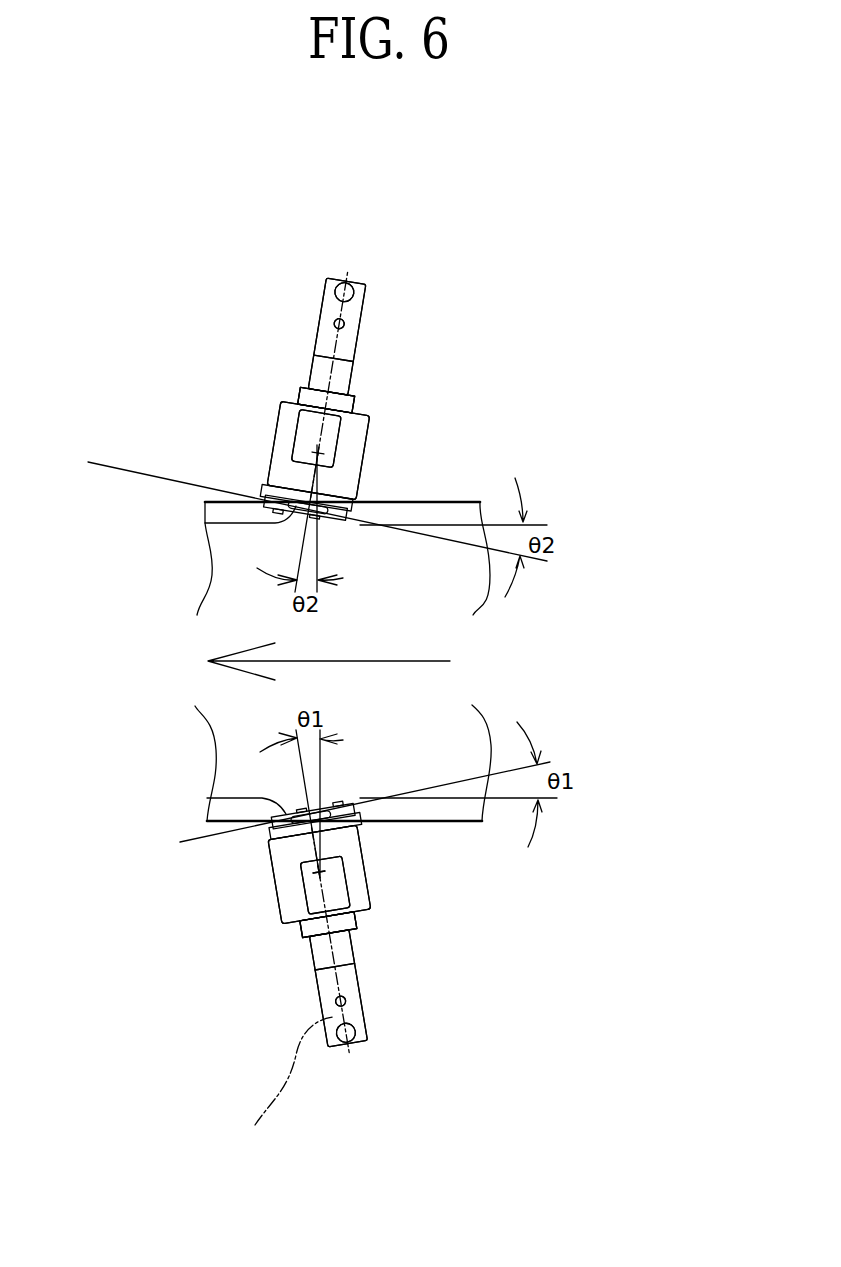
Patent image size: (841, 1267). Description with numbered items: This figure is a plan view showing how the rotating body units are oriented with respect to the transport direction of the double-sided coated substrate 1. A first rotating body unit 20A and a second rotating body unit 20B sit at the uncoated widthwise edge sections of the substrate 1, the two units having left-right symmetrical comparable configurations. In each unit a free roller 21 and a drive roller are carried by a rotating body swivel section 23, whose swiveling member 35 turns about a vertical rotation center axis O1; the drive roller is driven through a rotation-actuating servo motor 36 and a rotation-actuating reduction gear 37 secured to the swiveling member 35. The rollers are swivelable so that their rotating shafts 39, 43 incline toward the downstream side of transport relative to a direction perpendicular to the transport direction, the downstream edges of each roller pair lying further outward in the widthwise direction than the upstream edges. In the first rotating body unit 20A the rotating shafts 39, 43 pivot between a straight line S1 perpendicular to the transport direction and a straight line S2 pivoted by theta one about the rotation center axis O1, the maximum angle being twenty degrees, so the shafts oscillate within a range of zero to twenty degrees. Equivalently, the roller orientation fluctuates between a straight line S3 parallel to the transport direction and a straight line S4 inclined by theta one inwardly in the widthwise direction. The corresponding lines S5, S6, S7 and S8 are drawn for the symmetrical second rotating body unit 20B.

The substrate 1 is at (462, 822).
The free roller 21 is at (205, 524).
The rotating body swivel section 23 is at (260, 376).
The swiveling member 35 is at (332, 892).
The rotation-actuating servo motor 36 is at (362, 1018).
The rotation-actuating reduction gear 37 is at (345, 952).
The rotation center axis O1 is at (314, 875).
The rotating shaft 39 is at (281, 1085).
The rotating shaft 43 is at (294, 1071).
The first rotating body unit 20A is at (417, 996).
The second rotating body unit 20B is at (417, 362).
The straight line S1 is at (322, 770).
The straight line S2 is at (307, 775).
The straight line S3 is at (506, 783).
The straight line S4 is at (506, 783).
The vertical reference line S5 is at (318, 546).
The tilted axis line S6 is at (303, 543).
The horizontal reference line S7 is at (497, 535).
The tilted reference line S8 is at (497, 535).